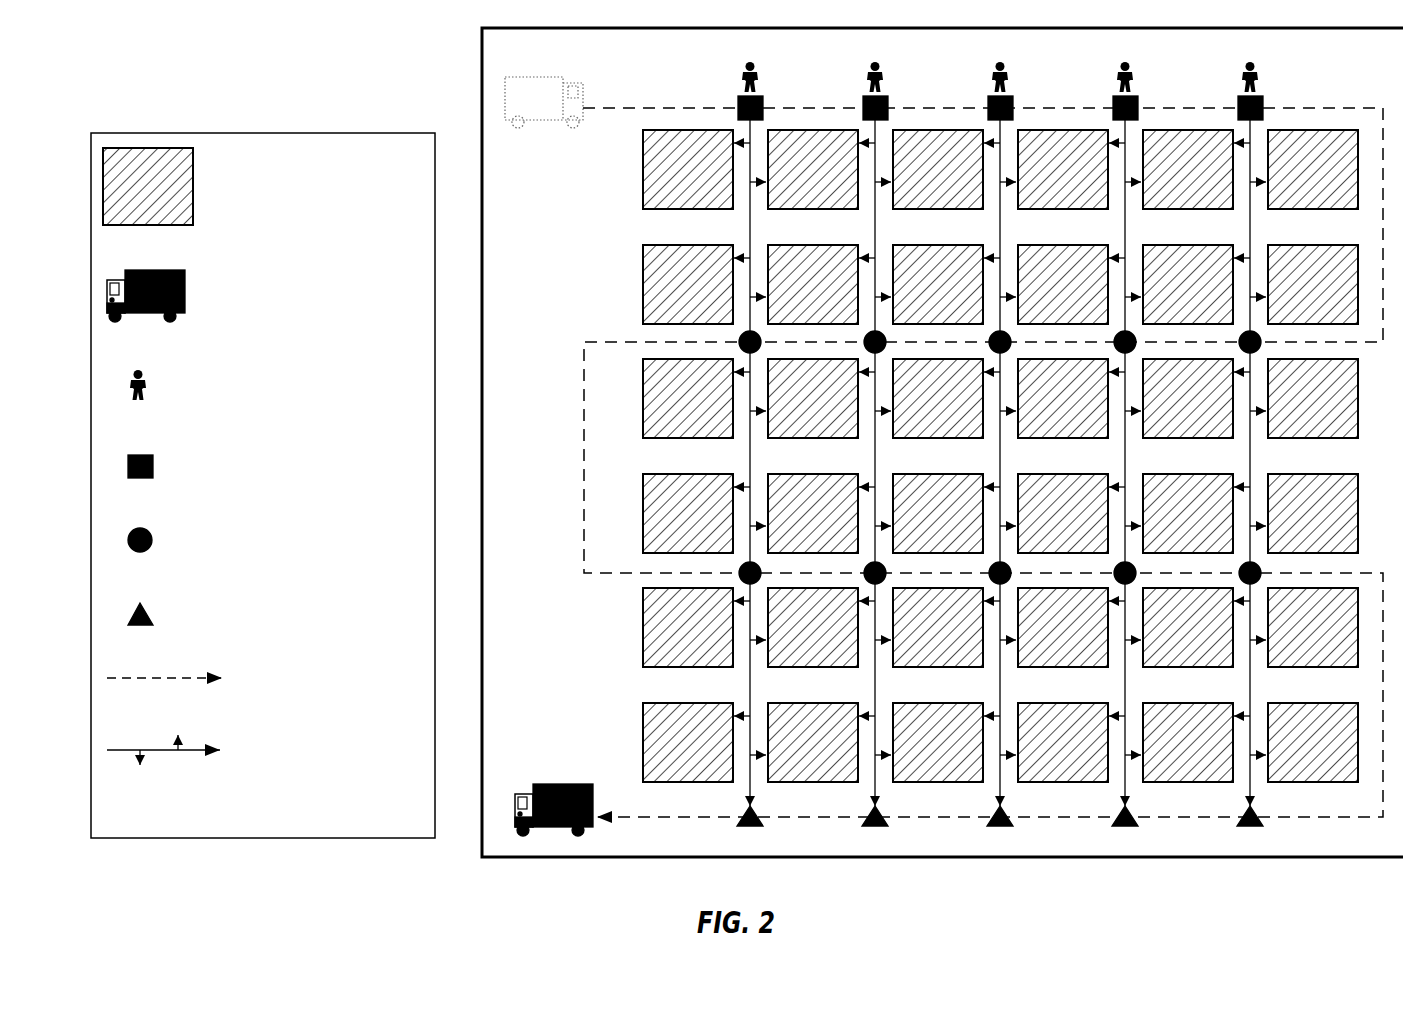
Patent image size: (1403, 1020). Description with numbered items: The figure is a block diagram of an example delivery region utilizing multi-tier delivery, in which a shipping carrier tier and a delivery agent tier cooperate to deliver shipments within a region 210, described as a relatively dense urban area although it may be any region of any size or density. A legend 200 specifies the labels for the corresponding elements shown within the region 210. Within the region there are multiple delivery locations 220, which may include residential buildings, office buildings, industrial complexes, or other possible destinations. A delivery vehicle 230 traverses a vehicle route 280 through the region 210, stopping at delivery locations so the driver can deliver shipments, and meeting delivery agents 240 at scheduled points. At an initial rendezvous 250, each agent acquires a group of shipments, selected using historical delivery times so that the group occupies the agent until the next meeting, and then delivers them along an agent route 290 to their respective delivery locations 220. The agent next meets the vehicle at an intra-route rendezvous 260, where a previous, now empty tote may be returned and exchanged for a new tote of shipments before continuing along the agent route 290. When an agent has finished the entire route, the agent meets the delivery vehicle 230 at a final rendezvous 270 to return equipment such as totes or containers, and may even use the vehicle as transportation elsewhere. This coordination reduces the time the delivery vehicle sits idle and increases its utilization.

The legend 200 is at (263, 485).
The region 210 is at (482, 28).
The delivery locations 220 is at (730, 456).
The delivery vehicle 230 is at (350, 456).
The delivery agents 240 is at (694, 231).
The initial rendezvous 250 is at (695, 287).
The intra-route rendezvous 260 is at (694, 457).
The final rendezvous 270 is at (695, 714).
The vehicle route 280 is at (745, 462).
The agent route 290 is at (686, 463).